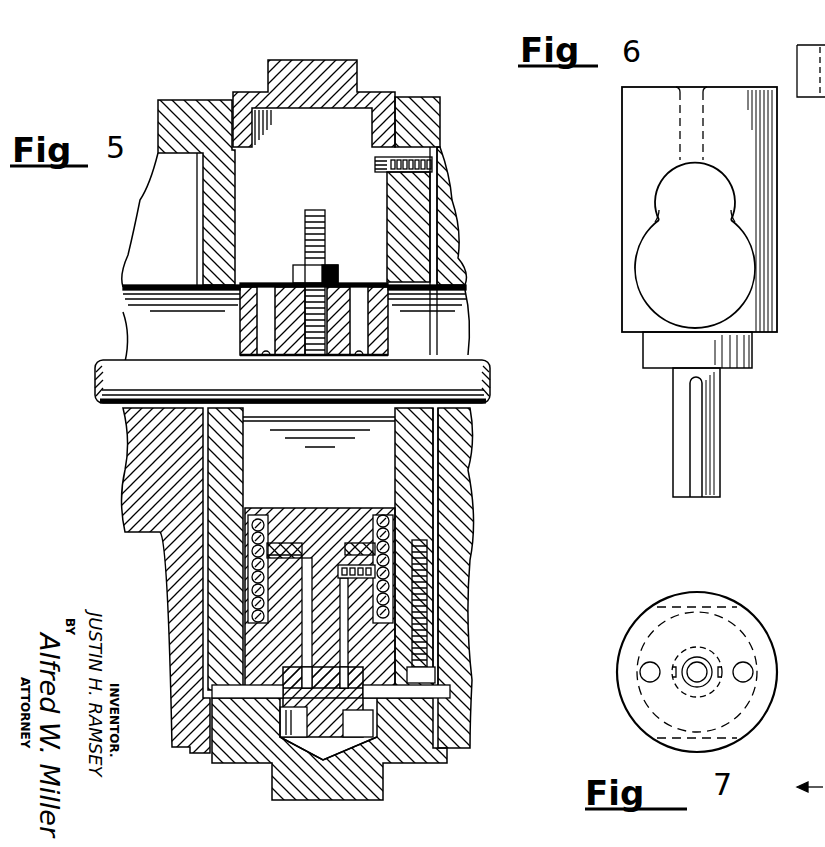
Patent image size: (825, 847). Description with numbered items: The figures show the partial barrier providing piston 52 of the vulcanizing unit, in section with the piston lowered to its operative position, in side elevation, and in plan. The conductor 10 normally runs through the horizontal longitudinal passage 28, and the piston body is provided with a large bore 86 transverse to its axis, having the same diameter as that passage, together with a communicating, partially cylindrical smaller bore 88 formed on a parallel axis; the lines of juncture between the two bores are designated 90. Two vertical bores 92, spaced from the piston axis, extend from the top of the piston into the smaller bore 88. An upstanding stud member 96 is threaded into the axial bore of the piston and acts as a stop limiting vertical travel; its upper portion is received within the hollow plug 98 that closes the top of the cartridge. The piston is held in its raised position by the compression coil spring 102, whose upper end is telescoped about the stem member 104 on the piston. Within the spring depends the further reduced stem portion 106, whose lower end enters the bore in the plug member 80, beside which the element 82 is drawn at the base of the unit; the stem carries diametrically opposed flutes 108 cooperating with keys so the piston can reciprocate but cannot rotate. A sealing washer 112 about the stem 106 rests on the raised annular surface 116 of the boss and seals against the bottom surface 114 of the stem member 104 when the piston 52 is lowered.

In FIG. 5, the conductor 10 is at (45, 388).
In FIG. 7, the conductor 10 is at (812, 797).
In FIG. 5, the horizontal longitudinal passage 28 is at (455, 272).
In FIG. 5, the piston 52 is at (350, 512).
In FIG. 6, the piston 52 is at (720, 87).
In FIG. 7, the piston 52 is at (755, 613).
In FIG. 5, the plug member 80 is at (385, 785).
In FIG. 5, the nozzle body 82 is at (253, 750).
In FIG. 6, the large bore 86 is at (650, 295).
In FIG. 6, the smaller bore 88 is at (730, 190).
In FIG. 6, the lines of juncture 90 is at (738, 212).
In FIG. 5, the vertical bores 92 is at (266, 357).
In FIG. 7, the vertical bores 92 is at (755, 672).
In FIG. 5, the stud member 96 is at (324, 236).
In FIG. 7, the stud member 96 is at (700, 670).
In FIG. 5, the plug 98 is at (338, 78).
In FIG. 5, the compression coil spring 102 is at (258, 572).
In FIG. 6, the stem member 104 is at (663, 348).
In FIG. 5, the stem portion 106 is at (323, 640).
In FIG. 6, the stem portion 106 is at (708, 453).
In FIG. 6, the flutes 108 is at (697, 497).
In FIG. 5, the sealing washer 112 is at (390, 535).
In FIG. 5, the bottom surface 114 is at (284, 543).
In FIG. 5, the raised annular surface 116 is at (363, 556).